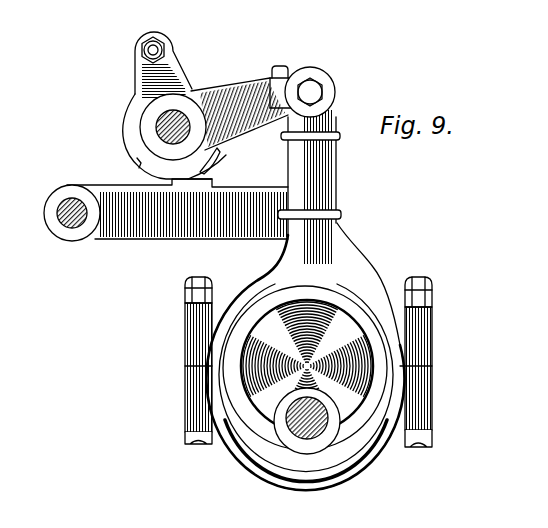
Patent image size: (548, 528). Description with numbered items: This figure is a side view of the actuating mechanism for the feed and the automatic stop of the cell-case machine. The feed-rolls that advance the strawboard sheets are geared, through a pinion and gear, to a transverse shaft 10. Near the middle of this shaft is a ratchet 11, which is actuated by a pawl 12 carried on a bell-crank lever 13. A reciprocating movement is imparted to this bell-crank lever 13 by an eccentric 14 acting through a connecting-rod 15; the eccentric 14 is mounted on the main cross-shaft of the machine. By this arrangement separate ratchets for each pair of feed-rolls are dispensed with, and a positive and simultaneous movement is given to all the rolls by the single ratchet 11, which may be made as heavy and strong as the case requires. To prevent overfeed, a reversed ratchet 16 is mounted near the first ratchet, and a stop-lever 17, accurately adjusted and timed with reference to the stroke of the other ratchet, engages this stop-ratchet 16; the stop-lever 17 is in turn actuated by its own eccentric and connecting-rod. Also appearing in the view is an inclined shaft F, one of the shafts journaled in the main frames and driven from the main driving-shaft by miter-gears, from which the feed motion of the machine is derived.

The transverse shaft 10 is at (165, 121).
The ratchet 11 is at (136, 147).
The pawl 12 is at (137, 80).
The bell-crank lever 13 is at (226, 82).
The eccentric 14 is at (337, 322).
The connecting-rod 15 is at (333, 183).
The reversed ratchet 16 is at (215, 159).
The stop-lever 17 is at (236, 200).
The inclined shaft F is at (292, 432).